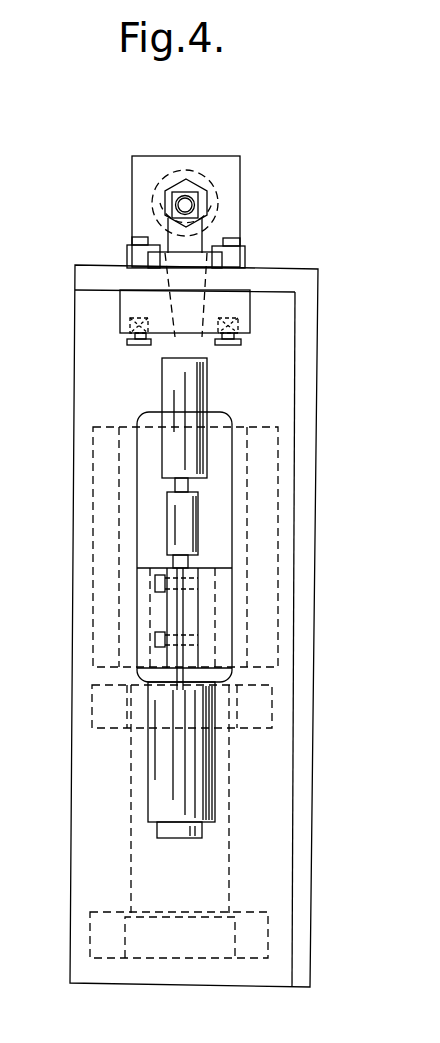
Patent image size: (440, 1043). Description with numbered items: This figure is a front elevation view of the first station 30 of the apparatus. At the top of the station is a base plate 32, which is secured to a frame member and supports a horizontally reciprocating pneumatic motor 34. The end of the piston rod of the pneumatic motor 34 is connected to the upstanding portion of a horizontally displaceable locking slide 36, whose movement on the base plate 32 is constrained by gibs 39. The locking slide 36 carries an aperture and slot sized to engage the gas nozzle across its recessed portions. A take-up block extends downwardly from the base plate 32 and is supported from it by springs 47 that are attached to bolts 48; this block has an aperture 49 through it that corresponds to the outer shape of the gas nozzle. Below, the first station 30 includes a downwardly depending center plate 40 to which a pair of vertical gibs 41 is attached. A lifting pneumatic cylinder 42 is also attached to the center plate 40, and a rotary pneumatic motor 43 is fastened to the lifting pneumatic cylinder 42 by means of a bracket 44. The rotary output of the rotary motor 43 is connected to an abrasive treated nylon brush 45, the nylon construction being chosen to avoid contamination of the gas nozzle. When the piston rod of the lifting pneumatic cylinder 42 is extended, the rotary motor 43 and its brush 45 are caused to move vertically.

The first station 30 is at (257, 161).
The base plate 32 is at (80, 275).
The pneumatic motor 34 is at (163, 172).
The locking slide 36 is at (183, 258).
The gibs 39 is at (237, 262).
The center plate 40 is at (73, 713).
The vertical gibs 41 is at (93, 521).
The lifting pneumatic cylinder 42 is at (133, 858).
The rotary pneumatic motor 43 is at (198, 792).
The bracket 44 is at (167, 615).
The abrasive treated nylon brush 45 is at (188, 400).
The springs 47 is at (250, 329).
The bolts 48 is at (228, 342).
The aperture 49 is at (170, 340).